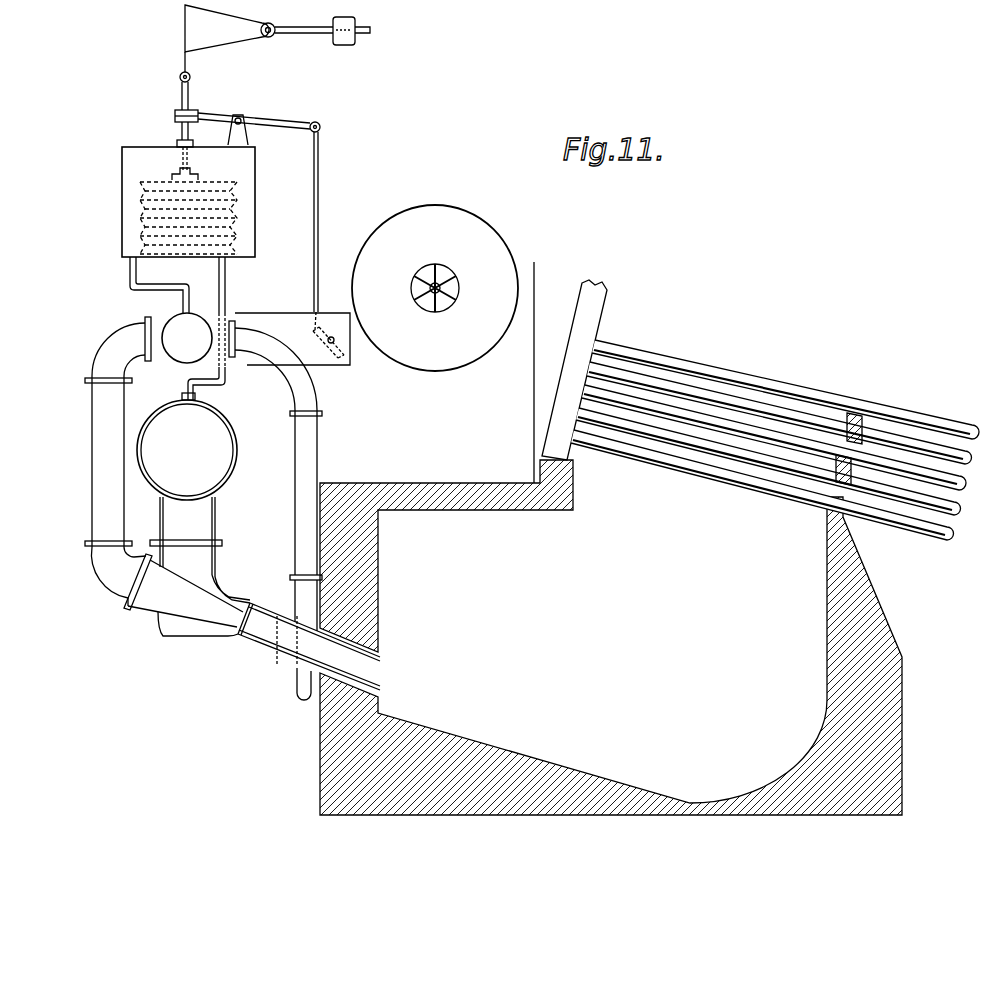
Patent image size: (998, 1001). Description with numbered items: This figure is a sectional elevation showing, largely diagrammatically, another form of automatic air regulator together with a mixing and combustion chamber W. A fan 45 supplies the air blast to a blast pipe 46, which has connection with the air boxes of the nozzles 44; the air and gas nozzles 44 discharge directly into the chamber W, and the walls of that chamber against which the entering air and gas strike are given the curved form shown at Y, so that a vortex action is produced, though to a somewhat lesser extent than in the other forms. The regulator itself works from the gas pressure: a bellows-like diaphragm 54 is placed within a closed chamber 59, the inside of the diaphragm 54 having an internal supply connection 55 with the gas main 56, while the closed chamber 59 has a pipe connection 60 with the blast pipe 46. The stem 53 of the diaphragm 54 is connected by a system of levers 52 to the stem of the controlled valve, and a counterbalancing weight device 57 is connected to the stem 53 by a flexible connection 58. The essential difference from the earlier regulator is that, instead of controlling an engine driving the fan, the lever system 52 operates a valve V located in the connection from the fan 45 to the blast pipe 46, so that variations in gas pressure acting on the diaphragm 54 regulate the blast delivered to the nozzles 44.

The nozzle 44 is at (335, 646).
The fan 45 is at (435, 276).
The blast pipe 46 is at (186, 354).
The system of levers 52 is at (337, 222).
The stem 53 is at (227, 127).
The bellows-like diaphragm 54 is at (152, 200).
The internal supply connection 55 is at (226, 328).
The gas main 56 is at (193, 501).
The counterbalancing weight device 57 is at (277, 35).
The flexible connection 58 is at (160, 97).
The closed chamber 59 is at (164, 202).
The pipe connection 60 is at (130, 285).
The valve V is at (333, 364).
The mixing and combustion chamber W is at (611, 637).
The curved wall form Y is at (707, 798).